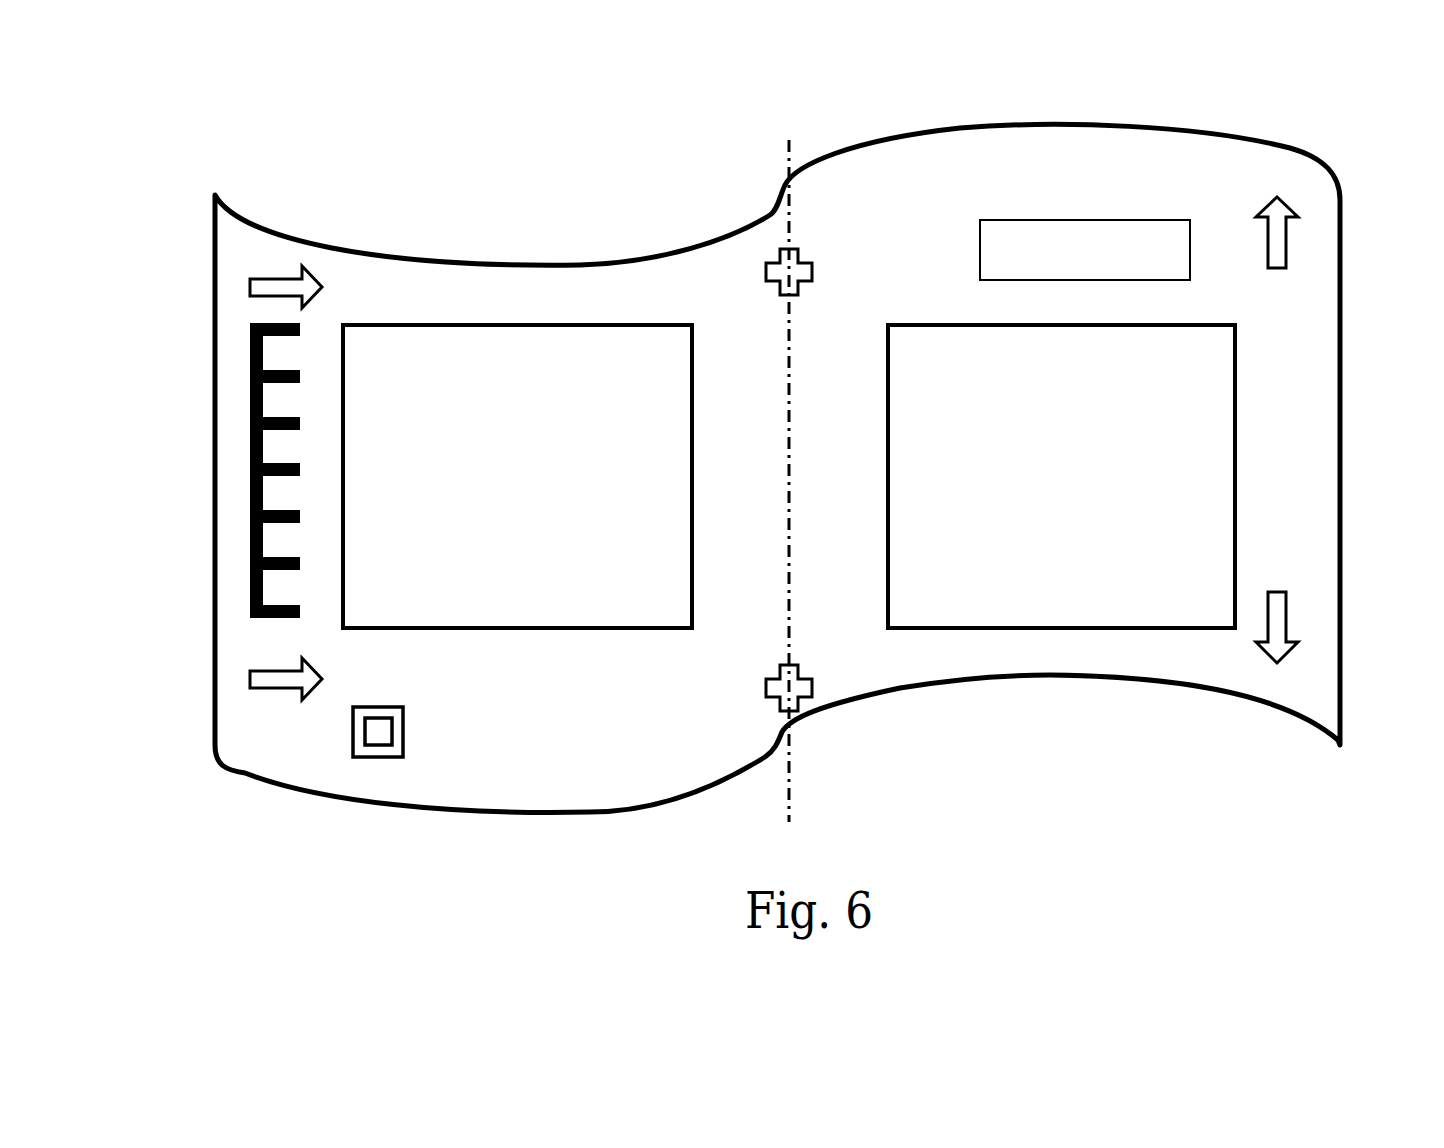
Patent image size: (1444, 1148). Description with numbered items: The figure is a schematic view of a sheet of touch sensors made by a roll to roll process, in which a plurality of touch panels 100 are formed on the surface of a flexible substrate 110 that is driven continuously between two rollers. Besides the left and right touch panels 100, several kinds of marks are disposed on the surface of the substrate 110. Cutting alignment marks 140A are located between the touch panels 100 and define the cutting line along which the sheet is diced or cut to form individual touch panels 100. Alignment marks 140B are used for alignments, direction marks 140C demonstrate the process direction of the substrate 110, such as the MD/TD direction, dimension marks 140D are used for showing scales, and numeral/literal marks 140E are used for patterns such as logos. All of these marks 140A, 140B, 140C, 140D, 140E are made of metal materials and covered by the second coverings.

The touch panel 100 is at (497, 393).
The flexible substrate 110 is at (593, 790).
The cutting alignment marks 140A is at (815, 272).
The alignment marks 140B is at (343, 743).
The direction marks 140C is at (1270, 675).
The dimension marks 140D is at (240, 482).
The numeral/literal marks 140E is at (1143, 208).